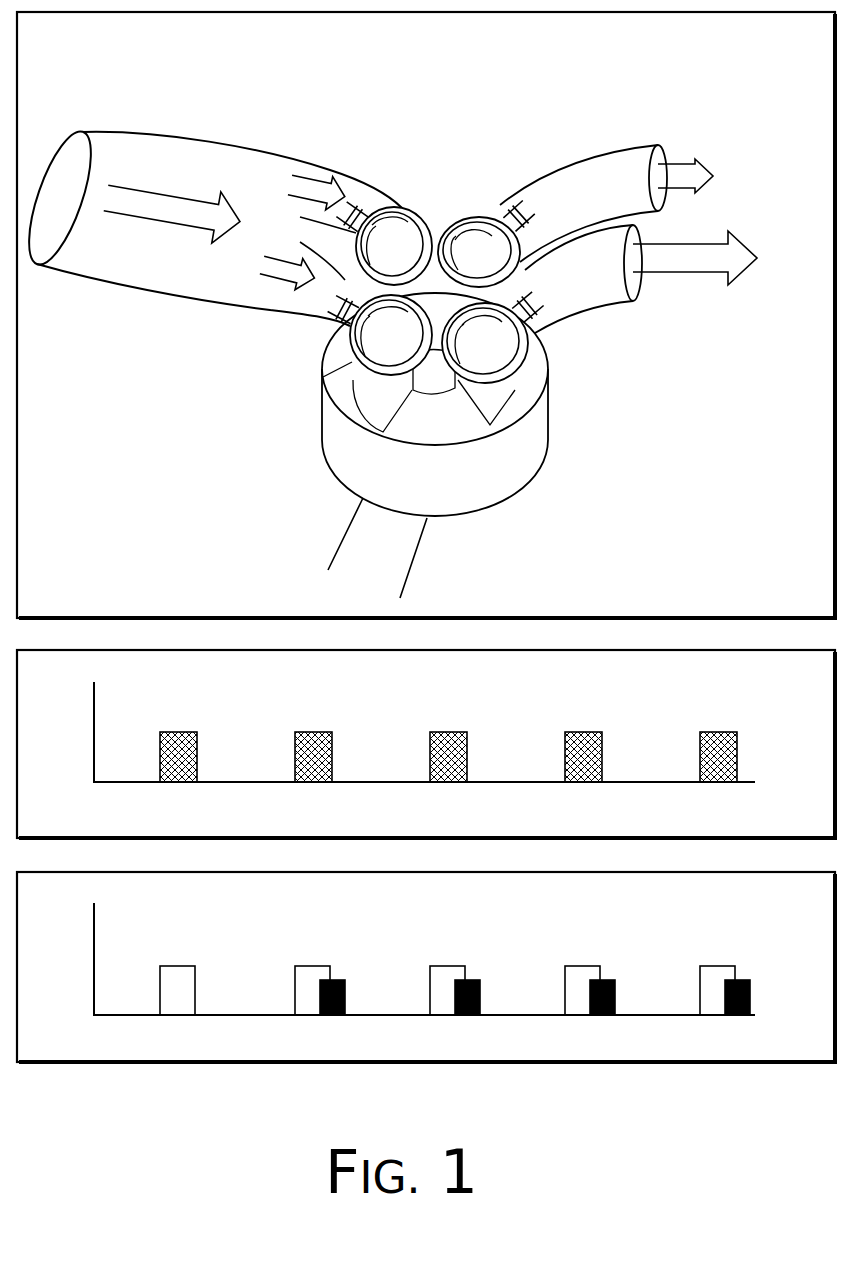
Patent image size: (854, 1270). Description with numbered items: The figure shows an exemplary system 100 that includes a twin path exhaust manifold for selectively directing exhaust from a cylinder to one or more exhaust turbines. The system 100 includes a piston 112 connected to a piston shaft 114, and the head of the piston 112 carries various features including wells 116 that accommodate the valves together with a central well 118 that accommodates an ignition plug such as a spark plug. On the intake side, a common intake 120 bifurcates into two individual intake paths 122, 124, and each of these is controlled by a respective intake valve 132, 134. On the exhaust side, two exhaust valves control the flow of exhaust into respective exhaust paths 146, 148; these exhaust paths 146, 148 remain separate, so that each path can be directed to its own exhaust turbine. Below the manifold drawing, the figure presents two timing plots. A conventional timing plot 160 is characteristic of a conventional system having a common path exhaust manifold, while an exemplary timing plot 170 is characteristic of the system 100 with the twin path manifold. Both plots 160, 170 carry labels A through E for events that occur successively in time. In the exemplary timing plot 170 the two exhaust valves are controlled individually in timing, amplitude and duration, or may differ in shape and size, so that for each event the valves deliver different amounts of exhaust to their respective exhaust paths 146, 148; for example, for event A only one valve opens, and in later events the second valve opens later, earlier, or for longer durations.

The twin path exhaust manifold system 100 is at (722, 48).
The piston 112 is at (510, 492).
The piston shaft 114 is at (413, 562).
The wells 116 is at (378, 408).
The central hub 118 is at (430, 352).
The common intake 120 is at (256, 148).
The first intake path 122 is at (358, 178).
The second intake path 124 is at (284, 305).
The first intake valve 132 is at (410, 207).
The second intake valve 134 is at (352, 364).
The first exhaust path 146 is at (614, 149).
The second exhaust path 148 is at (598, 312).
The conventional timing plot 160 is at (758, 686).
The exemplary timing plot 170 is at (692, 911).